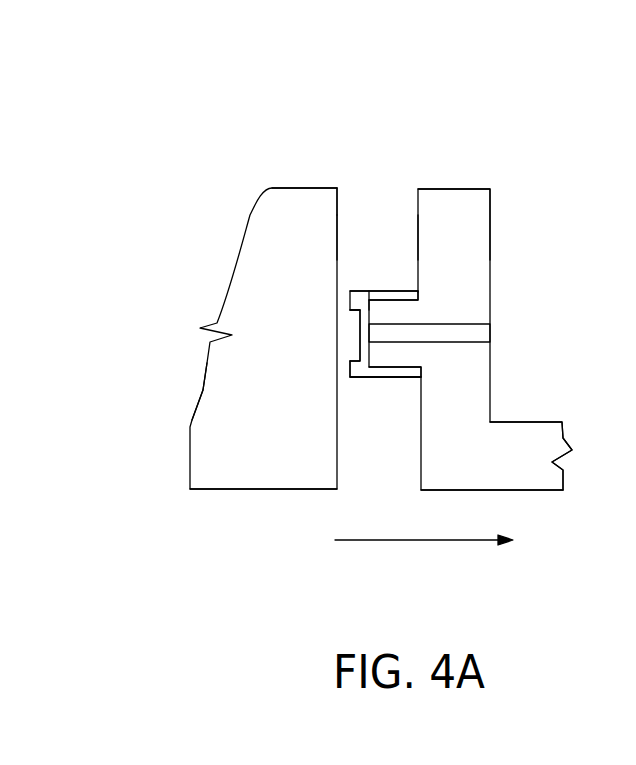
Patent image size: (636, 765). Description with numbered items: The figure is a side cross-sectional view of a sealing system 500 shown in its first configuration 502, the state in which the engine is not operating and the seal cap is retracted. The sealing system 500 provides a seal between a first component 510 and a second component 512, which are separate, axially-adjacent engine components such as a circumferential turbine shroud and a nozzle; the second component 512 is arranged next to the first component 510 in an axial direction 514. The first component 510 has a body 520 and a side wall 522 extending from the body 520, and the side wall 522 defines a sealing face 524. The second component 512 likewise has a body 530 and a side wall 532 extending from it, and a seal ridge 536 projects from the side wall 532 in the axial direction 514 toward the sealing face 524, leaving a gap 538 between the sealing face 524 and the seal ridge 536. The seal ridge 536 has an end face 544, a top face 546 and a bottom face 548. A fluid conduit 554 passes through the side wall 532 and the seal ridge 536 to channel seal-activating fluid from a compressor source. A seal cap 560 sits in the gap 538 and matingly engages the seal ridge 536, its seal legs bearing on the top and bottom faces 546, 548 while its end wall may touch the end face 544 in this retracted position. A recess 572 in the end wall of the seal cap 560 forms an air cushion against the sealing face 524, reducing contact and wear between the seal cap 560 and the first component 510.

The sealing system 500 is at (236, 166).
The first configuration 502 is at (412, 181).
The first component 510 is at (205, 487).
The second component 512 is at (547, 482).
The axial direction 514 is at (447, 540).
The body 520 is at (212, 402).
The side wall 522 is at (323, 198).
The sealing face 524 is at (337, 207).
The body 530 is at (557, 427).
The side wall 532 is at (482, 197).
The seal ridge 536 is at (379, 358).
The gap 538 is at (369, 226).
The end face 544 is at (365, 298).
The top face 546 is at (400, 299).
The bottom face 548 is at (415, 367).
The fluid conduit 554 is at (465, 324).
The seal cap 560 is at (407, 377).
The recess 572 is at (350, 345).